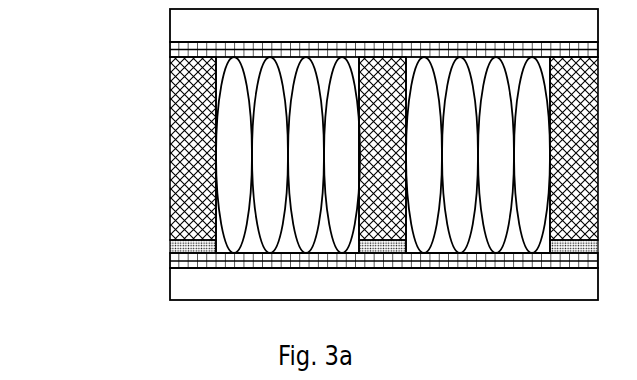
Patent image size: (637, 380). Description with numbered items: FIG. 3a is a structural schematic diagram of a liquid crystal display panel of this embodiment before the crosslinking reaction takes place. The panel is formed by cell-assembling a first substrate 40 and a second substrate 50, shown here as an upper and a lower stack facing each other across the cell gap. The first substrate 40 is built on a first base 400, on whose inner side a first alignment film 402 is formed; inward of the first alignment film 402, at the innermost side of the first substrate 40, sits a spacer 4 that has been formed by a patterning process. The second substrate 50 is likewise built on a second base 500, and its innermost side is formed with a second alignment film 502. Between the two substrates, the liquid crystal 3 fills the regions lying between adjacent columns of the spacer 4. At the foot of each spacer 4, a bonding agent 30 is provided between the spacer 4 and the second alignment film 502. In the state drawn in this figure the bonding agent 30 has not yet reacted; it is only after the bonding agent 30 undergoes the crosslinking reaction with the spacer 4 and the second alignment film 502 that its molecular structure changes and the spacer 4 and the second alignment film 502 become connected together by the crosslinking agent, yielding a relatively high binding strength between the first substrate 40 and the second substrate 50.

The first substrate 40 is at (97, 15).
The first base 400 is at (186, 21).
The first alignment film 402 is at (186, 49).
The spacer 4 is at (172, 79).
The liquid crystal 3 is at (234, 115).
The bonding agent 30 is at (170, 243).
The second substrate 50 is at (99, 257).
The second alignment film 502 is at (188, 258).
The second base 500 is at (188, 289).